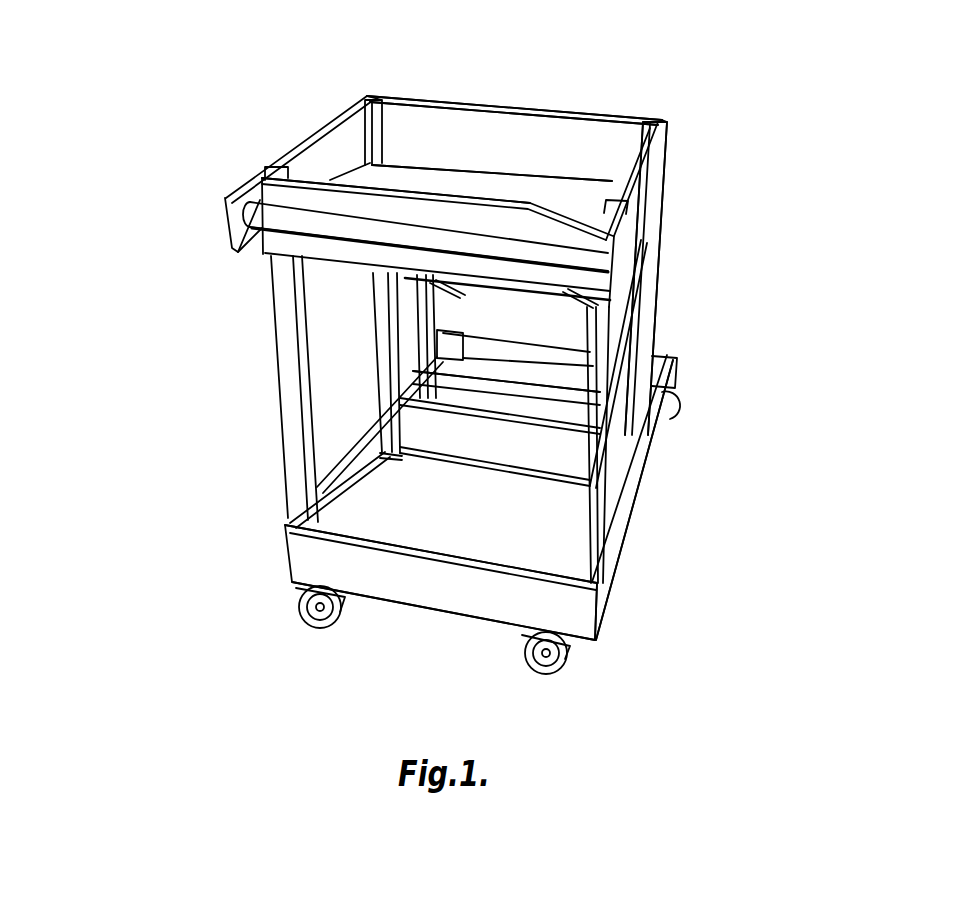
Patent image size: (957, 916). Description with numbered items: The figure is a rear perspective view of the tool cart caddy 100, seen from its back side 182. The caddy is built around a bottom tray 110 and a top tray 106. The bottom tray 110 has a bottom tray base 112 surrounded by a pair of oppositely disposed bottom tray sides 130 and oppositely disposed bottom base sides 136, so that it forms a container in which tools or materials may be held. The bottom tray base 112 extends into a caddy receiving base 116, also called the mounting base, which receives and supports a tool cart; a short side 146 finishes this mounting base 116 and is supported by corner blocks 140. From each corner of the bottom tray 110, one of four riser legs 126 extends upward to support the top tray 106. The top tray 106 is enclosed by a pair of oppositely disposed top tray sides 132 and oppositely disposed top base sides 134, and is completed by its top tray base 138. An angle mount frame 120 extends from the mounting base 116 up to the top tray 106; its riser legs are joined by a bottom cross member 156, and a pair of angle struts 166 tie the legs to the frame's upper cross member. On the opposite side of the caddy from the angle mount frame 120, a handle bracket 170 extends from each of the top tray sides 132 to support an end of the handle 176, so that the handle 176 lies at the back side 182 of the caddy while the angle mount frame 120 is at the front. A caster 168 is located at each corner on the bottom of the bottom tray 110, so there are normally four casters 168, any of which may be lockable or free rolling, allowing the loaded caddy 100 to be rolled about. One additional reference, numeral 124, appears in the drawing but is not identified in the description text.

The tool cart caddy 100 is at (700, 126).
The top tray 106 is at (287, 147).
The bottom tray 110 is at (641, 557).
The bottom tray base 112 is at (522, 547).
The caddy receiving base 116 is at (540, 372).
The angle mount frame 120 is at (413, 347).
The rear left leg 124 is at (427, 314).
The riser leg 126 is at (654, 120).
The bottom tray side 130 is at (490, 440).
The top tray side 132 is at (475, 130).
The top base side 134 is at (345, 140).
The bottom base side 136 is at (355, 467).
The top tray base 138 is at (425, 176).
The corner block 140 is at (667, 368).
The short side 146 is at (503, 347).
The bottom cross member 156 is at (555, 365).
The angle strut 166 is at (585, 300).
The caster 168 is at (298, 613).
The handle bracket 170 is at (253, 193).
The handle 176 is at (263, 240).
The back side 182 is at (195, 225).